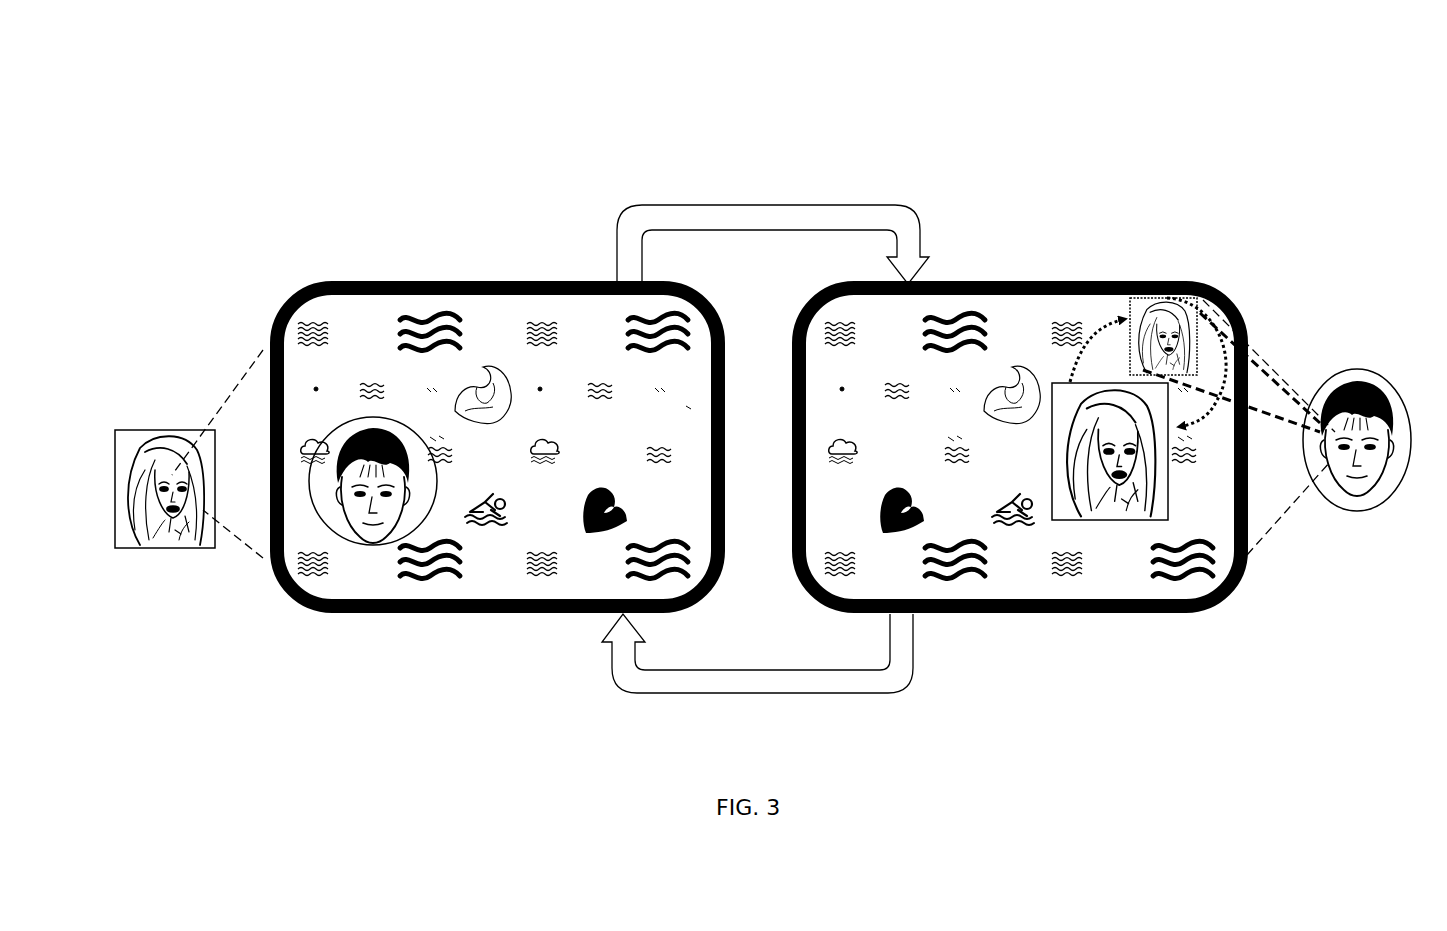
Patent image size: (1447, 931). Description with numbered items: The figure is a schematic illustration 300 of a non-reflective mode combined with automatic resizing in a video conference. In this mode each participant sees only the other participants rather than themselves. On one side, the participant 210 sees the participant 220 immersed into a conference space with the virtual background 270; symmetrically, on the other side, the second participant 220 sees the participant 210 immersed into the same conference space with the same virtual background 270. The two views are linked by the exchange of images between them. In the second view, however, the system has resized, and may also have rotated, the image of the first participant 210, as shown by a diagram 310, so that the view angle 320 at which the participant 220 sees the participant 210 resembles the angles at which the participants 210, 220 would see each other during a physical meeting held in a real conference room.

The schematic illustration 300 is at (1420, 124).
The participant 210 is at (147, 430).
The participant 220 is at (383, 546).
The virtual background 270 is at (747, 441).
The diagram 310 is at (1150, 298).
The view angle 320 is at (1266, 410).